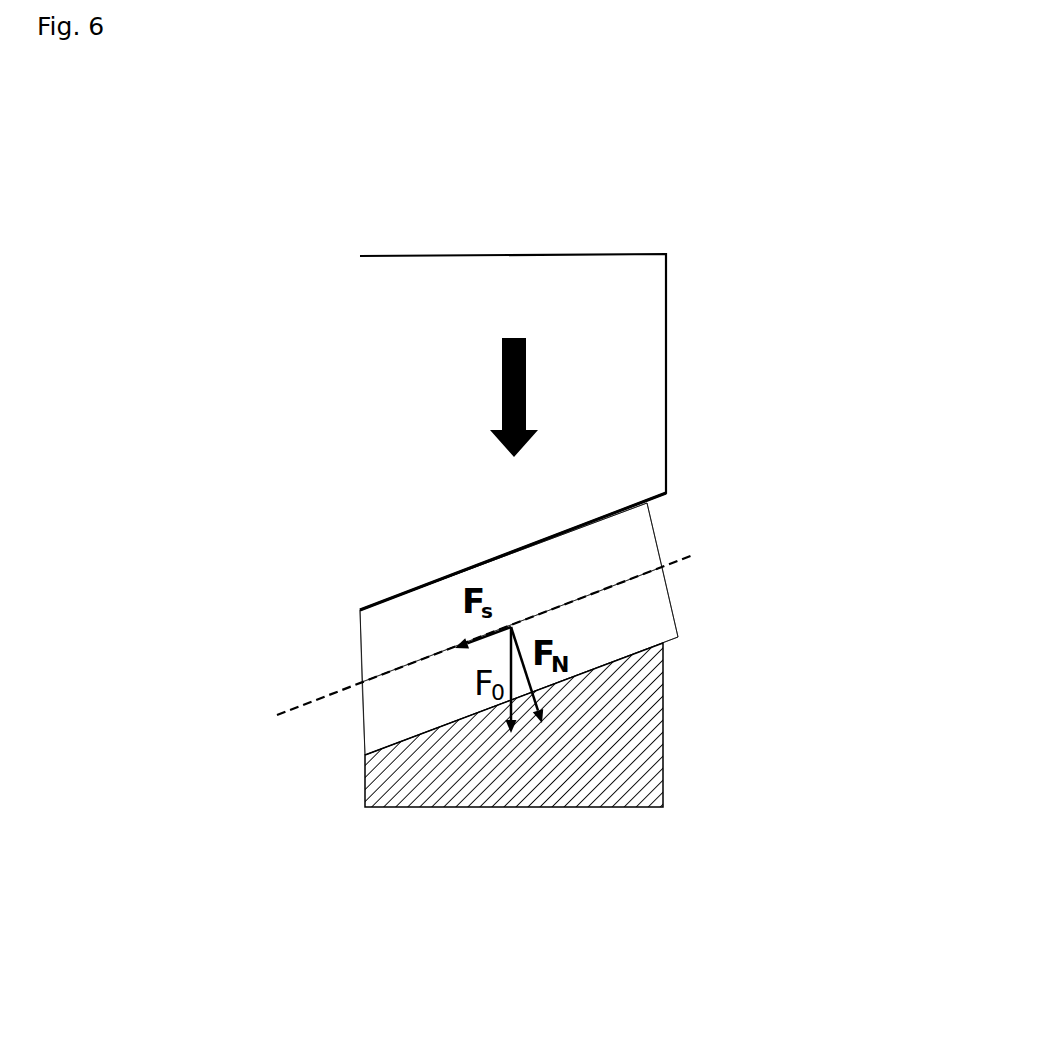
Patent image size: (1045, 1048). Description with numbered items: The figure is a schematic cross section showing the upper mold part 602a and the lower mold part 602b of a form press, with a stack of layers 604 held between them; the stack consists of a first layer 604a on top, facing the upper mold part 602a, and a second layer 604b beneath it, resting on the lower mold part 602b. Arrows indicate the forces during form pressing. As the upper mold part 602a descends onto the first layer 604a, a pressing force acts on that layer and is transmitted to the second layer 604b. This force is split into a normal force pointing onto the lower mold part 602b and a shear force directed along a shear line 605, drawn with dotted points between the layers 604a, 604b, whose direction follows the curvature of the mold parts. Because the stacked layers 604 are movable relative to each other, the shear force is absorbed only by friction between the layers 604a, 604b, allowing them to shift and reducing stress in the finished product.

The upper mold part 602a is at (666, 360).
The lower mold part 602b is at (662, 727).
The stacked layers 604 is at (329, 641).
The first layer 604a is at (648, 517).
The second layer 604b is at (673, 613).
The shear line 605 is at (315, 700).